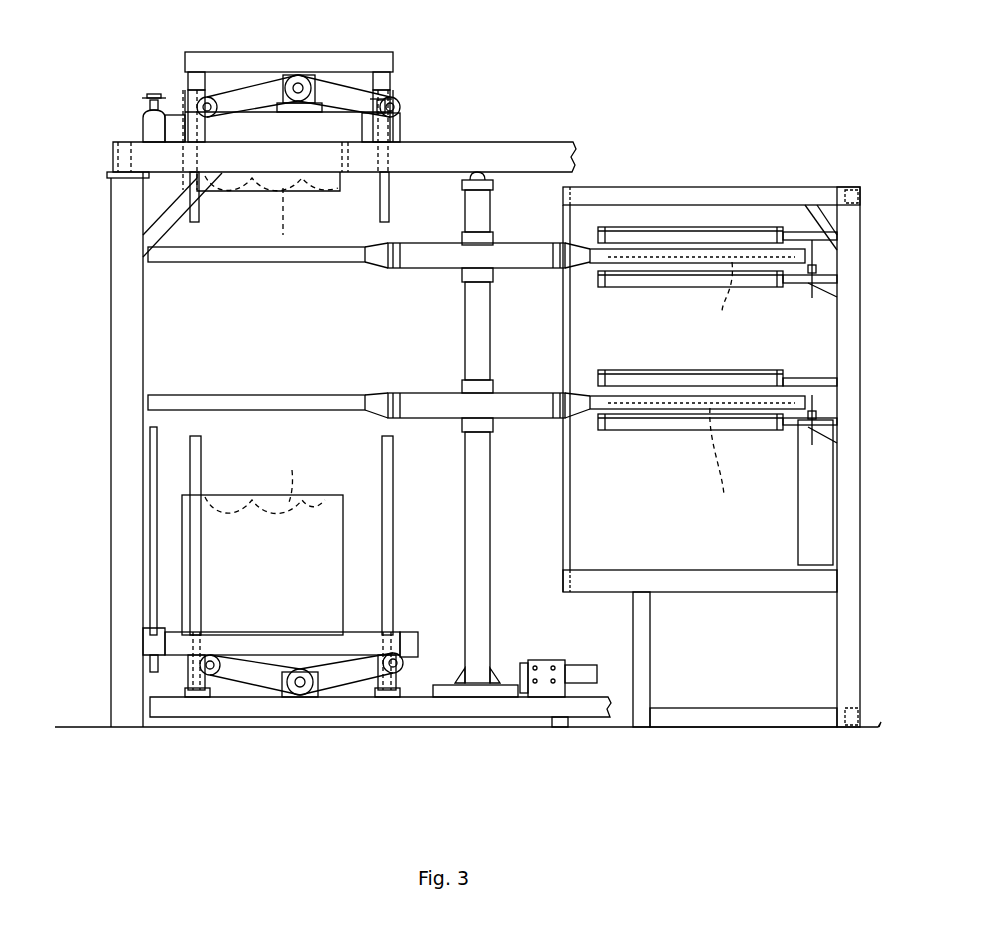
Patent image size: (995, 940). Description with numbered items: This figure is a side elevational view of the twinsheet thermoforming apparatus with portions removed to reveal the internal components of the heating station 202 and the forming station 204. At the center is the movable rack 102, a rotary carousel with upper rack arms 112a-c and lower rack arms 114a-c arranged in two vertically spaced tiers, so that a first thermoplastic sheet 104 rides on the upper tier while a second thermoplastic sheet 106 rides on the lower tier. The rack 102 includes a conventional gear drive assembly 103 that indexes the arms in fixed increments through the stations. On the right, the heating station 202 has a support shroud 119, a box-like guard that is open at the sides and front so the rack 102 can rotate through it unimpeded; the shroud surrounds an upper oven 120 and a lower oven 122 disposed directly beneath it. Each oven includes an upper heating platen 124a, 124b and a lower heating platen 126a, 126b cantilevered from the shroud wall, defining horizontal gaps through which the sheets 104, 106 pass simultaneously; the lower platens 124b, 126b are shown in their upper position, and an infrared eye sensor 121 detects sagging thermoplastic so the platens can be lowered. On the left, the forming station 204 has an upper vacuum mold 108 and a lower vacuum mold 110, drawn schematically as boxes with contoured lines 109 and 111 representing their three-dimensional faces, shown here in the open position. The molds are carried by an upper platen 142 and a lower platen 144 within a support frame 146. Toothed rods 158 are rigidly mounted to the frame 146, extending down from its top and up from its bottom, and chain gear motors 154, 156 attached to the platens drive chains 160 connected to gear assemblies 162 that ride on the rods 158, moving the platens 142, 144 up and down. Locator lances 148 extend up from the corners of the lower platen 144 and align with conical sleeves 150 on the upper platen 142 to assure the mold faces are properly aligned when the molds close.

The movable rack 102 is at (165, 255).
The gear drive assembly 103 is at (585, 670).
The first thermoplastic sheet 104 is at (724, 299).
The second thermoplastic sheet 106 is at (737, 457).
The upper vacuum mold 108 is at (305, 192).
The contoured line 109 is at (271, 213).
The lower vacuum mold 110 is at (343, 522).
The contoured line 111 is at (265, 483).
The upper rack arms 112a-c is at (535, 265).
The lower rack arms 114a-c is at (535, 413).
The support shroud 119 is at (706, 224).
The upper oven 120 is at (846, 252).
The infrared eye sensor 121 is at (812, 300).
The lower oven 122 is at (836, 392).
The upper heating platen 124a is at (600, 236).
The upper heating platen 124b is at (600, 382).
The lower heating platen 126a is at (616, 288).
The lower heating platen 126b is at (618, 432).
The upper platen 142 is at (172, 127).
The lower platen 144 is at (445, 632).
The support frame 146 is at (111, 345).
The locator lance 148 is at (150, 437).
The locator sleeve 150 is at (156, 120).
The upper chain gear motor 154 is at (303, 76).
The lower chain gear motor 156 is at (298, 690).
The toothed rod 158 is at (199, 208).
The chain 160 is at (243, 86).
The gear assembly 162 is at (207, 97).
The heating station 202 is at (700, 148).
The forming station 204 is at (138, 72).